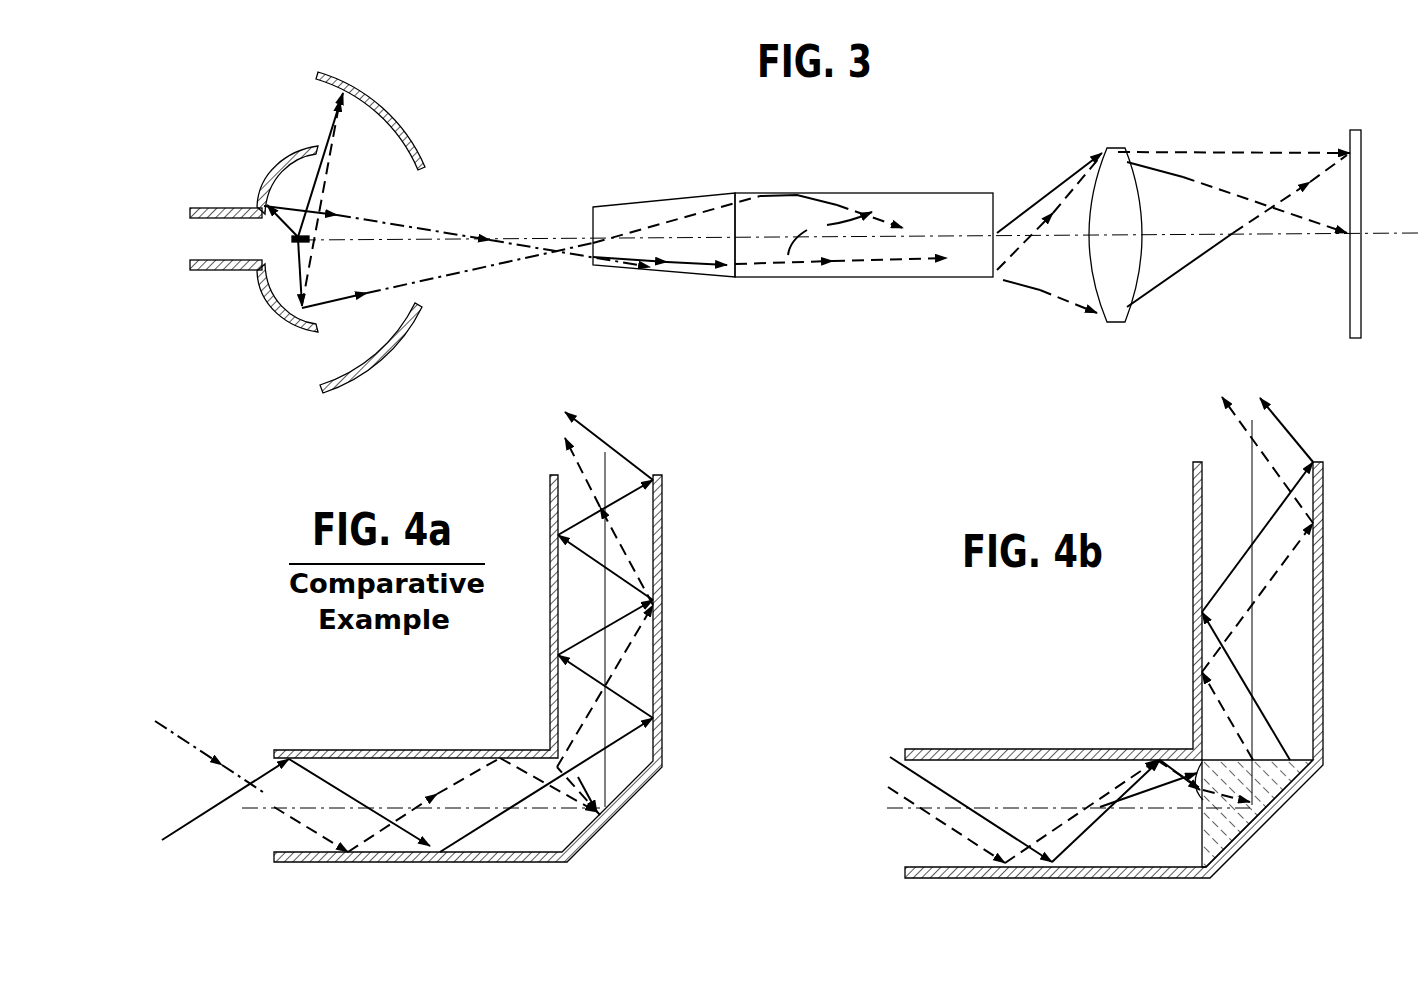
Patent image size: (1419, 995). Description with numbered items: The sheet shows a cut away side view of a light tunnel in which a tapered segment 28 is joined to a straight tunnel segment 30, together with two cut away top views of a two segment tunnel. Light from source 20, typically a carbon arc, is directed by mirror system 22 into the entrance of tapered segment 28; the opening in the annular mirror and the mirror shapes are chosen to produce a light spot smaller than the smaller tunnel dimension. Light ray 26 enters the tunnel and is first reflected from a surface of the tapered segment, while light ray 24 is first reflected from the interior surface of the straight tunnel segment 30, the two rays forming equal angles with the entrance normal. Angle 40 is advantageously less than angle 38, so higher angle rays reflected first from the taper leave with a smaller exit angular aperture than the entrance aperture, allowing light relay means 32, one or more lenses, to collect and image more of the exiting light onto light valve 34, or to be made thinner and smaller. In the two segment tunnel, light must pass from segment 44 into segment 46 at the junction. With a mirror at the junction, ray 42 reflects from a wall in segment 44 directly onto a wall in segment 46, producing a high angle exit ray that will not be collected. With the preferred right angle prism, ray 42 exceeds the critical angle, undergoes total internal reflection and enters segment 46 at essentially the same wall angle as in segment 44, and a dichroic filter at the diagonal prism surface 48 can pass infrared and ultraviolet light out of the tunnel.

In FIG. 3, the light source 20 is at (292, 240).
In FIG. 3, the mirror system 22 is at (300, 156).
In FIG. 3, the light ray 24 is at (481, 268).
In FIG. 3, the light ray 26 is at (425, 228).
In FIG. 3, the tapered segment 28 is at (662, 204).
In FIG. 3, the light pipe 30 is at (756, 192).
In FIG. 3, the light relay means 32 is at (1112, 148).
In FIG. 3, the light valve 34 is at (1357, 130).
In FIG. 3, the angle 38 is at (868, 214).
In FIG. 3, the angle 40 is at (788, 255).
In FIG. 4a, the ray 42 is at (617, 740).
In FIG. 4b, the ray 42 is at (1098, 840).
In FIG. 4a, the segment 44 is at (359, 762).
In FIG. 4b, the segment 44 is at (1040, 752).
In FIG. 4a, the segment 46 is at (645, 672).
In FIG. 4b, the segment 46 is at (1323, 657).
In FIG. 4b, the diagonal prism surface 48 is at (1235, 850).